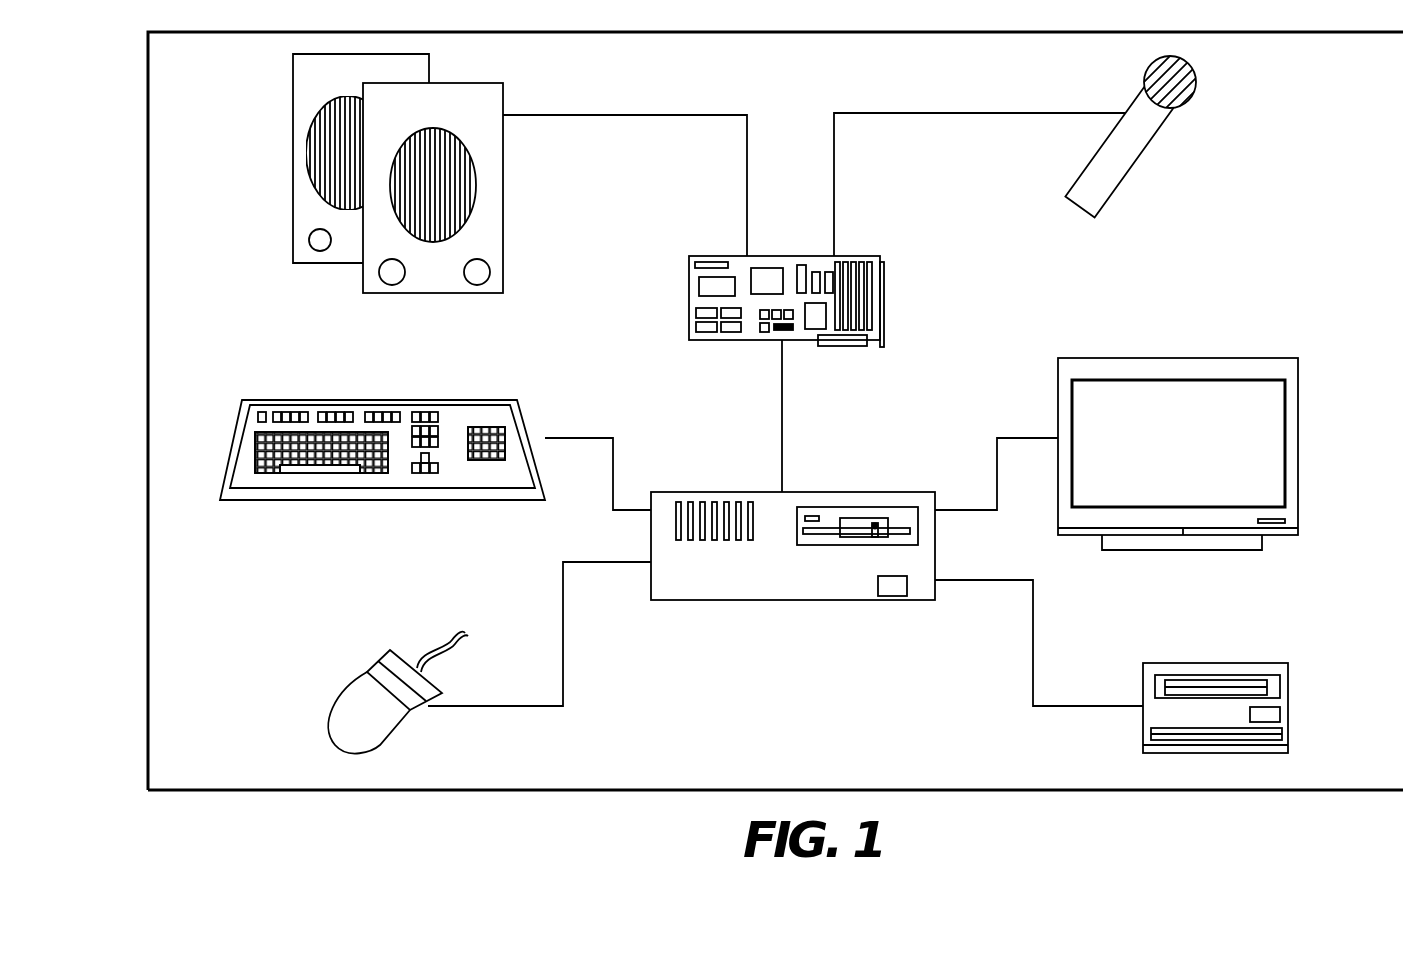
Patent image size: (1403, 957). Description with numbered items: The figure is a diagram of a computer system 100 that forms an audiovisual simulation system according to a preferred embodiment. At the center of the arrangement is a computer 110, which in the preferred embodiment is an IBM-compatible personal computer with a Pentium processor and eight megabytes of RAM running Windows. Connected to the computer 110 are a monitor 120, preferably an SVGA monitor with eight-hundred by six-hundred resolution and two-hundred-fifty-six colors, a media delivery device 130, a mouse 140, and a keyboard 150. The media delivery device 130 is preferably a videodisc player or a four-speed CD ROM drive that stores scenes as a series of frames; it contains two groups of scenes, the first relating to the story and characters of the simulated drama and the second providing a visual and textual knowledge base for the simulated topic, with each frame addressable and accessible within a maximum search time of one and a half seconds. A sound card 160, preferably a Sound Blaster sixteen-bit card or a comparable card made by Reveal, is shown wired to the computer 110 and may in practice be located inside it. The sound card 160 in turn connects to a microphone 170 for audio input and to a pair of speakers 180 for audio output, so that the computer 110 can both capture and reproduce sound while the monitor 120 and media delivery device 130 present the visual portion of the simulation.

The computer system 100 is at (148, 492).
The computer 110 is at (730, 492).
The monitor 120 is at (1227, 358).
The media delivery device 130 is at (1263, 663).
The mouse 140 is at (355, 675).
The keyboard 150 is at (268, 400).
The sound card 160 is at (880, 297).
The microphone 170 is at (1152, 137).
The speakers 180 is at (498, 202).